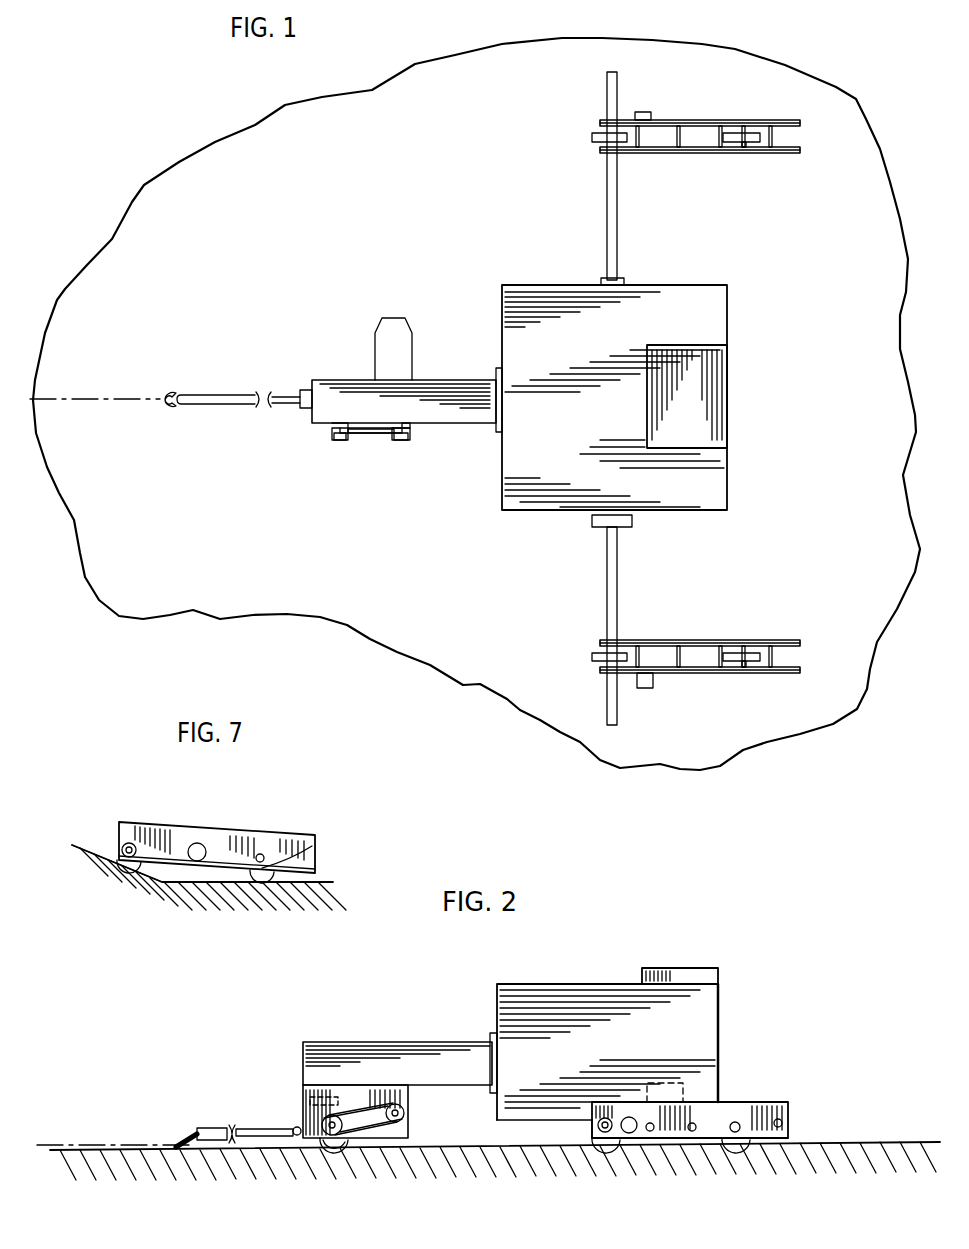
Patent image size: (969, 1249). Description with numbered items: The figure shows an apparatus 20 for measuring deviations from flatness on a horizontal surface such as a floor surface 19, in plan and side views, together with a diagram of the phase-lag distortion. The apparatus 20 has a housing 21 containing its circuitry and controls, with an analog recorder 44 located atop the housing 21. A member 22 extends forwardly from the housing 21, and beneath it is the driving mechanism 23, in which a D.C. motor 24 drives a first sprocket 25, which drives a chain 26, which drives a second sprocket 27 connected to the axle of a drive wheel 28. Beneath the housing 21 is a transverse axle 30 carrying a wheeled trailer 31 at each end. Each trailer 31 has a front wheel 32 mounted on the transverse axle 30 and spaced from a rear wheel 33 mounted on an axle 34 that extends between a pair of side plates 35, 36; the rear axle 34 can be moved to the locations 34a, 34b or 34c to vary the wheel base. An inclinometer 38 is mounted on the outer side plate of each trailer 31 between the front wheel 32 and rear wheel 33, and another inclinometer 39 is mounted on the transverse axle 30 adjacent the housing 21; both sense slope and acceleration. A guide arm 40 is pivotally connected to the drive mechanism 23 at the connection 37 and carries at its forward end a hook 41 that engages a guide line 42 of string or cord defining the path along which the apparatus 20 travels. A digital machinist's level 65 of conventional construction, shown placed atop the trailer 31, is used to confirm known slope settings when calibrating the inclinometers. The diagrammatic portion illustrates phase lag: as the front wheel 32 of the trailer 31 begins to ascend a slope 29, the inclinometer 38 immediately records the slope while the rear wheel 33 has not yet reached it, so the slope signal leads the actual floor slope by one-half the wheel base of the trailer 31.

In FIG. 1, the floor surface 19 is at (229, 550).
In FIG. 7, the floor surface 19 is at (196, 880).
In FIG. 2, the floor surface 19 is at (488, 1148).
In FIG. 1, the apparatus 20 is at (677, 262).
In FIG. 2, the apparatus 20 is at (737, 987).
In FIG. 1, the housing 21 is at (541, 340).
In FIG. 2, the housing 21 is at (582, 1040).
In FIG. 1, the member 22 is at (341, 410).
In FIG. 2, the member 22 is at (446, 1077).
In FIG. 1, the apparatus driving mechanism 23 is at (364, 442).
In FIG. 2, the apparatus driving mechanism 23 is at (303, 1095).
In FIG. 1, the D.C. motor 24 is at (408, 350).
In FIG. 1, the first sprocket 25 is at (405, 440).
In FIG. 2, the first sprocket 25 is at (404, 1112).
In FIG. 1, the chain 26 is at (372, 434).
In FIG. 2, the chain 26 is at (360, 1120).
In FIG. 1, the second sprocket 27 is at (338, 440).
In FIG. 2, the second sprocket 27 is at (325, 1150).
In FIG. 2, the drive wheel 28 is at (340, 1150).
In FIG. 7, the slope 29 is at (80, 845).
In FIG. 1, the transverse axle 30 is at (607, 225).
In FIG. 2, the transverse axle 30 is at (600, 1140).
In FIG. 1, the wheeled trailer 31 is at (697, 103).
In FIG. 7, the wheeled trailer 31 is at (166, 820).
In FIG. 2, the wheeled trailer 31 is at (733, 1082).
In FIG. 1, the front wheel 32 is at (592, 137).
In FIG. 7, the front wheel 32 is at (129, 861).
In FIG. 2, the front wheel 32 is at (607, 1140).
In FIG. 1, the rear wheel 33 is at (745, 135).
In FIG. 7, the rear wheel 33 is at (270, 866).
In FIG. 2, the rear wheel 33 is at (740, 1140).
In FIG. 1, the axle 34 is at (745, 150).
In FIG. 2, the axle 34 is at (738, 1122).
In FIG. 2, the rear axle location 34a is at (650, 1135).
In FIG. 2, the rear axle location 34b is at (692, 1135).
In FIG. 2, the rear axle location 34c is at (782, 1123).
In FIG. 1, the side plate 35 is at (660, 120).
In FIG. 1, the side plate 36 is at (696, 153).
In FIG. 7, the side plate 36 is at (238, 857).
In FIG. 2, the side plate 36 is at (721, 1124).
In FIG. 1, the pivotal connection 37 is at (300, 392).
In FIG. 2, the pivotal connection 37 is at (293, 1128).
In FIG. 1, the inclinometer 38 is at (642, 112).
In FIG. 7, the inclinometer 38 is at (197, 848).
In FIG. 2, the inclinometer 38 is at (629, 1118).
In FIG. 1, the inclinometer 39 is at (632, 522).
In FIG. 1, the guide arm 40 is at (225, 395).
In FIG. 2, the guide arm 40 is at (205, 1128).
In FIG. 1, the hook 41 is at (165, 393).
In FIG. 2, the hook 41 is at (180, 1138).
In FIG. 1, the guide line 42 is at (70, 396).
In FIG. 2, the guide line 42 is at (72, 1145).
In FIG. 1, the analog recorder 44 is at (662, 350).
In FIG. 2, the analog recorder 44 is at (664, 975).
In FIG. 2, the digital machinist's level 65 is at (665, 1083).